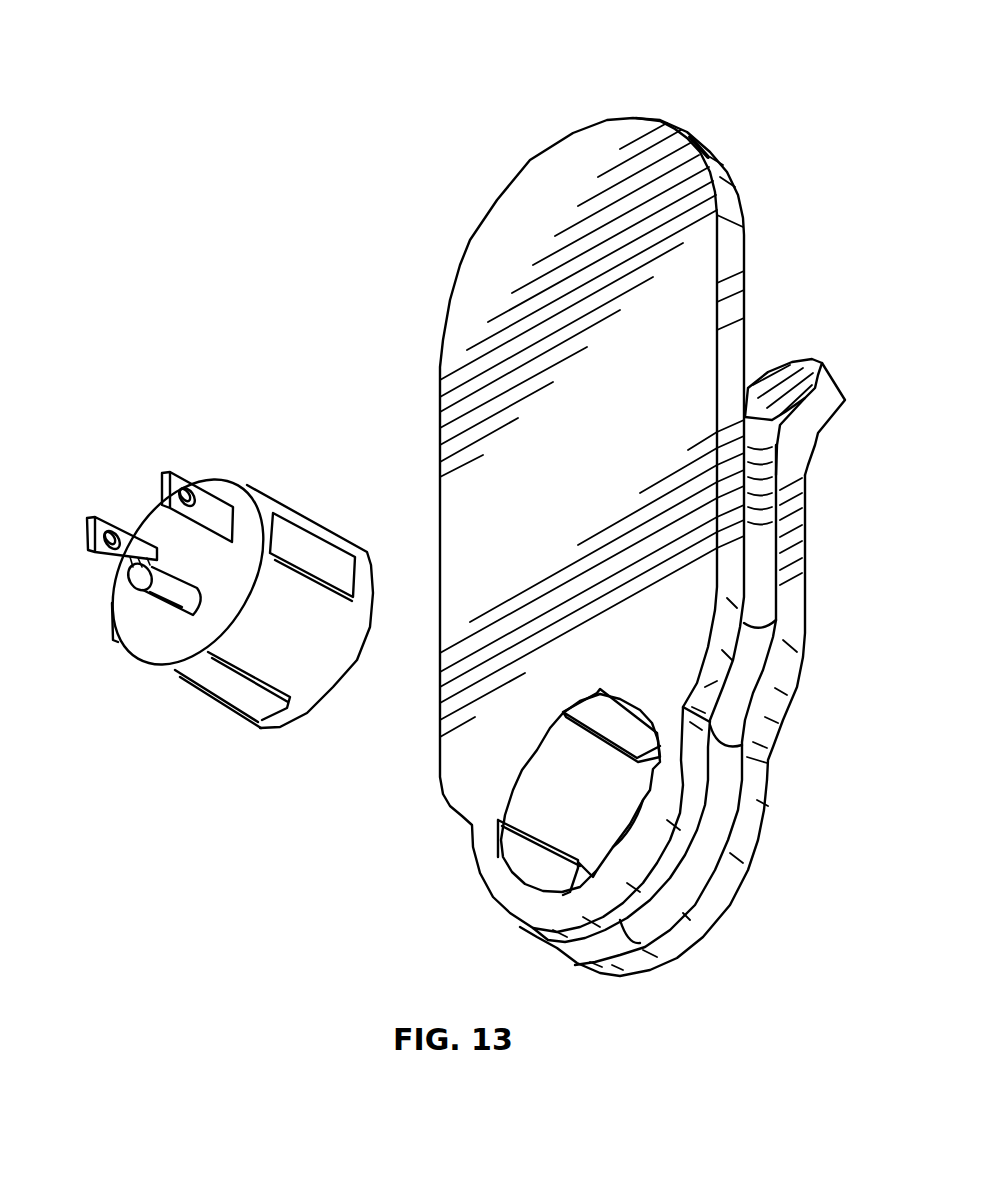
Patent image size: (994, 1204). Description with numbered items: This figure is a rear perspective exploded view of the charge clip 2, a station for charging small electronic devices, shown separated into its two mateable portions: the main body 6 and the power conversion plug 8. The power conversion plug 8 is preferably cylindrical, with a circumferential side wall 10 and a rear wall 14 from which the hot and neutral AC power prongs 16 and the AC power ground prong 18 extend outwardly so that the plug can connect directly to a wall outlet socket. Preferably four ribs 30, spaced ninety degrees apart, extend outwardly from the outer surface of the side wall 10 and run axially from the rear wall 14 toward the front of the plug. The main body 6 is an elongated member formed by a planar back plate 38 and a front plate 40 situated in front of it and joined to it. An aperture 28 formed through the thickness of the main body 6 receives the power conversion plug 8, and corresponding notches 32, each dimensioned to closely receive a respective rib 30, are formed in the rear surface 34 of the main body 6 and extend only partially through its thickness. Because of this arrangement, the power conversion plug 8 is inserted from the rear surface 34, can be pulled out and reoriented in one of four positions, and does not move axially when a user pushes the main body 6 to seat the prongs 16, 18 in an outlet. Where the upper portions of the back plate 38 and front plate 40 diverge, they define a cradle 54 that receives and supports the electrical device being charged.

The charge clip 2 is at (258, 86).
The main body 6 is at (803, 895).
The power conversion plug 8 is at (116, 395).
The circumferential side wall 10 is at (313, 520).
The rear wall 14 is at (234, 484).
The hot and neutral AC power prongs 16 is at (172, 470).
The AC power ground prong 18 is at (152, 602).
The aperture 28 is at (543, 760).
The ribs 30 is at (232, 697).
The notches 32 is at (510, 840).
The rear surface 34 is at (682, 648).
The back plate 38 is at (440, 345).
The front plate 40 is at (810, 470).
The cradle 54 is at (782, 320).